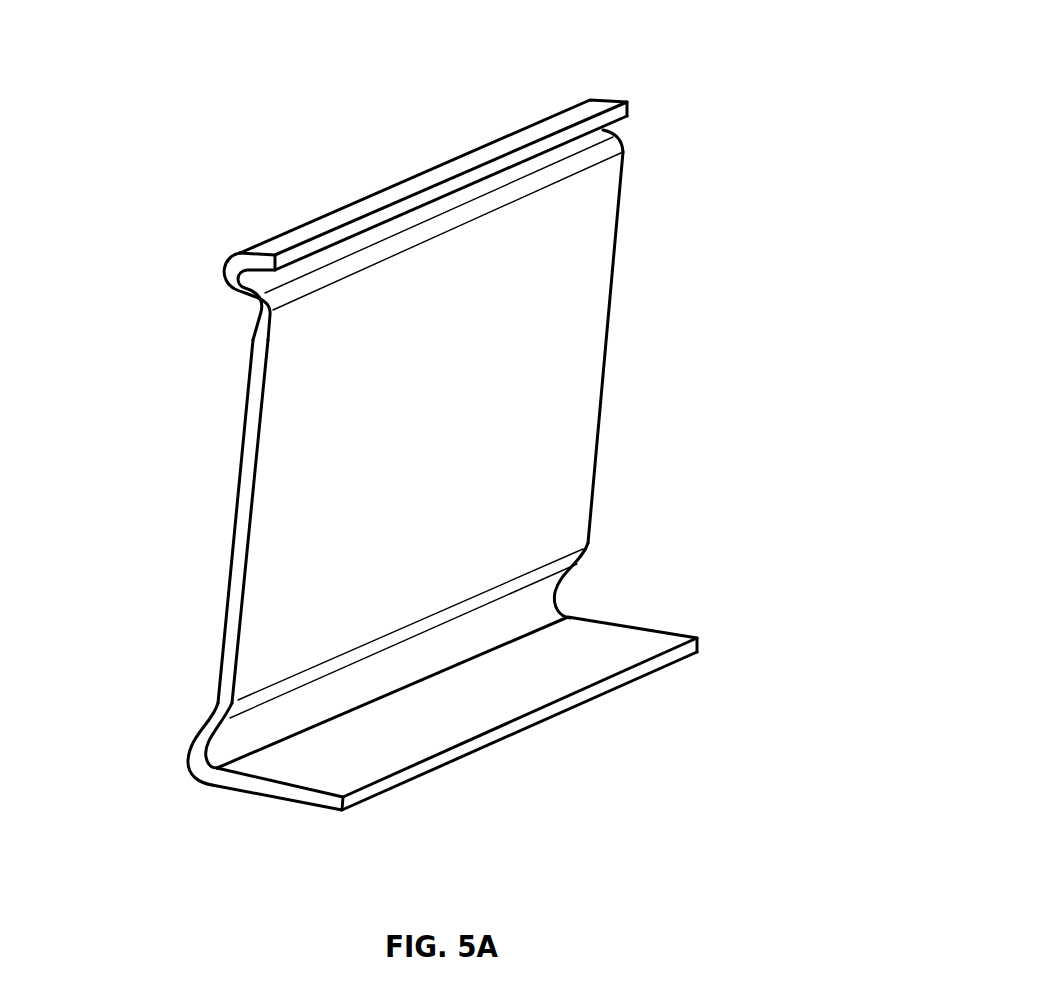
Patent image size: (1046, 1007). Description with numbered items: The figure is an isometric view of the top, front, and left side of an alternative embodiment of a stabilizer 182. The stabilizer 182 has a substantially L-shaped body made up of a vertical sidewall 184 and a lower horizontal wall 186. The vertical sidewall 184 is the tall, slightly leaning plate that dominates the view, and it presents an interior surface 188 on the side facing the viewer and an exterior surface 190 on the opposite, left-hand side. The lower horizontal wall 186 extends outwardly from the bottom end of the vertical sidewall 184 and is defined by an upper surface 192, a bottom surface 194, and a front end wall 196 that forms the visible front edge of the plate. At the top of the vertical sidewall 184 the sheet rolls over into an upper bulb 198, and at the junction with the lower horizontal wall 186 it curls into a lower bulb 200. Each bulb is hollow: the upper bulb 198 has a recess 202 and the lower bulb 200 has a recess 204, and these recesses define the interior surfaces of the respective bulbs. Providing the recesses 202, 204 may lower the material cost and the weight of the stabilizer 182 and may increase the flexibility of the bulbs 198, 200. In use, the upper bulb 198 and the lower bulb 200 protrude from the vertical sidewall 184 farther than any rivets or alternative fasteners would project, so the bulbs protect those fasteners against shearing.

The stabilizer 182 is at (593, 70).
The vertical sidewall 184 is at (250, 482).
The lower horizontal wall 186 is at (651, 645).
The interior surface 188 is at (582, 353).
The exterior surface 190 is at (248, 392).
The upper surface 192 is at (608, 638).
The bottom surface 194 is at (257, 797).
The front end wall 196 is at (547, 713).
The upper bulb 198 is at (236, 256).
The lower bulb 200 is at (188, 757).
The recess 202 is at (630, 137).
The recess 204 is at (592, 583).